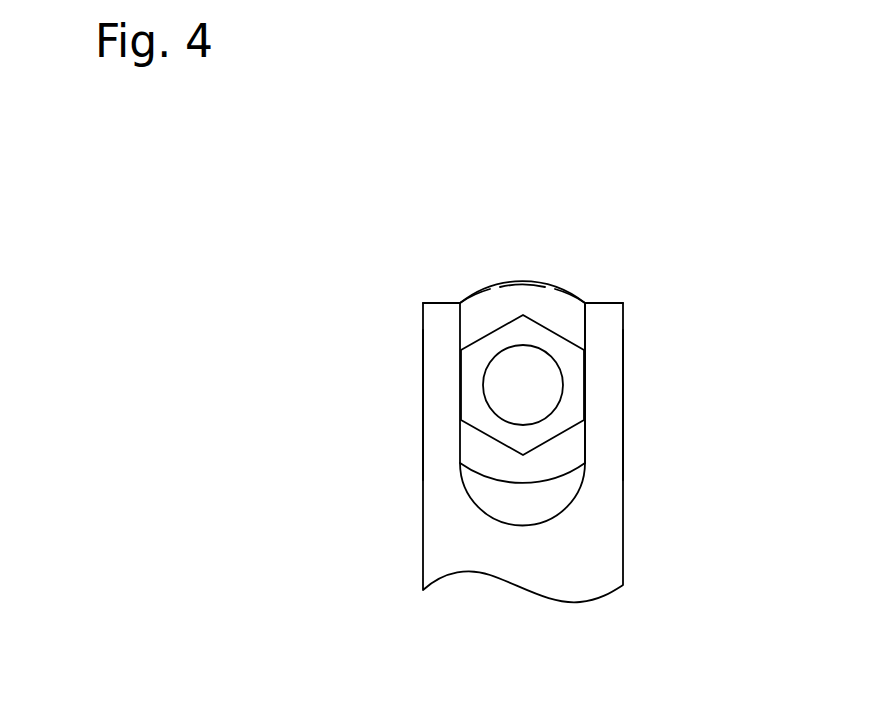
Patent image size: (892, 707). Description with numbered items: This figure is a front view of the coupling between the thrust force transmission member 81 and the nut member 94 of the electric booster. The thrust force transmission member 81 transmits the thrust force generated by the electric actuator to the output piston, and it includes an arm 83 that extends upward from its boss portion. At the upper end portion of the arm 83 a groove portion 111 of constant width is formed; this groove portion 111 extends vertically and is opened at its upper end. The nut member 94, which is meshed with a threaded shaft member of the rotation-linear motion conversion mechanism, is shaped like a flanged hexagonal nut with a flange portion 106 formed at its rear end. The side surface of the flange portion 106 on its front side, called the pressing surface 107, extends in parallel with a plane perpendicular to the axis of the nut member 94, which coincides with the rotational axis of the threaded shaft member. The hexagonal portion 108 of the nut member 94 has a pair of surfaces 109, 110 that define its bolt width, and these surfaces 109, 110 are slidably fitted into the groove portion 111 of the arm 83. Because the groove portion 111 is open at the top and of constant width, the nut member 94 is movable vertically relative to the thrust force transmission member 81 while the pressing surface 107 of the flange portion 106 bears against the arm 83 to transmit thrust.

The thrust force transmission member 81 is at (626, 484).
The arm 83 is at (585, 550).
The nut member 94 is at (552, 285).
The flange portion 106 is at (573, 296).
The pressing surface 107 is at (518, 305).
The hexagonal portion 108 is at (508, 336).
The surface 109 is at (460, 377).
The surface 110 is at (585, 388).
The groove portion 111 is at (470, 326).